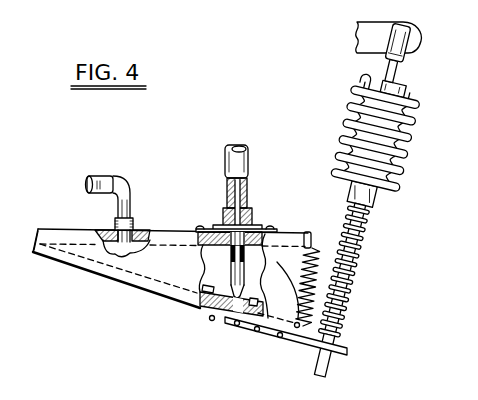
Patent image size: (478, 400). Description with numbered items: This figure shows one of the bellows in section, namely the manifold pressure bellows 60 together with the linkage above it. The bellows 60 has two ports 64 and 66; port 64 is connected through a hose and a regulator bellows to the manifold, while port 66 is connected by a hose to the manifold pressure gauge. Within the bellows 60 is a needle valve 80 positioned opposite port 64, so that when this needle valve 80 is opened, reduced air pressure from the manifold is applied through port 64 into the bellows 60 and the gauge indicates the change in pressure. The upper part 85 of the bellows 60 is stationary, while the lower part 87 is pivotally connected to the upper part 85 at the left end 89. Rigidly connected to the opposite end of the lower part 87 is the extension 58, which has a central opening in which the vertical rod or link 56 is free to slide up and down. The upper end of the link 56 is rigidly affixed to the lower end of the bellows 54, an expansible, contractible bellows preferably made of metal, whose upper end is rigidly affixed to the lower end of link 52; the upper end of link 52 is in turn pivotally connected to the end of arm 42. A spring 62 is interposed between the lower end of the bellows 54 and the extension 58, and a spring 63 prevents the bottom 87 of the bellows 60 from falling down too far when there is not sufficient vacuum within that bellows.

The arm 42 is at (367, 33).
The link 52 is at (398, 74).
The bellows 54 is at (403, 132).
The link 56 is at (325, 370).
The extension 58 is at (338, 351).
The bellows 60 is at (128, 287).
The spring 62 is at (362, 229).
The spring 63 is at (318, 248).
The port 64 is at (236, 157).
The port 66 is at (97, 180).
The needle valve 80 is at (227, 253).
The upper part 85 is at (142, 232).
The lower part 87 is at (217, 312).
The left end 89 is at (40, 245).